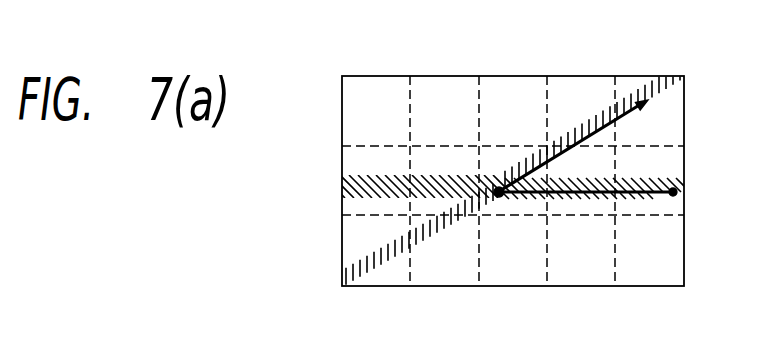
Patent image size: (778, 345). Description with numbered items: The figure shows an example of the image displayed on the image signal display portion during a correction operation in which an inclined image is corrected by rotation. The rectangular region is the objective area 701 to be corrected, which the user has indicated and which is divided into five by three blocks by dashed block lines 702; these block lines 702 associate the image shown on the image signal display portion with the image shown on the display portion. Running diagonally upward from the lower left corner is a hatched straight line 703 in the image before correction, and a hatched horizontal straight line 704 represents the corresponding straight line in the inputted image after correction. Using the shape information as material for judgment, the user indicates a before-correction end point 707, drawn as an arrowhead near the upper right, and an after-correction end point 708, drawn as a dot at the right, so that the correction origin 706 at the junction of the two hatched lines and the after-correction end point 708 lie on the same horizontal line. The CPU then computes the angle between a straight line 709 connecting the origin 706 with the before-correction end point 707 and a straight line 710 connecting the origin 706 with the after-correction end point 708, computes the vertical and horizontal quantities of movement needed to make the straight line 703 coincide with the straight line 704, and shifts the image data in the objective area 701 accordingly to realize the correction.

The objective area to be corrected 701 is at (530, 75).
The block lines 702 is at (615, 262).
The straight line in the image before correction 703 is at (375, 266).
The straight line in the image after correction 704 is at (368, 176).
The correction origin 706 is at (502, 197).
The before-correction end point 707 is at (647, 96).
The after-correction end point 708 is at (673, 196).
The straight line connecting the origin with the before-correction end point 709 is at (645, 110).
The straight line connecting the origin with the after-correction end point 710 is at (646, 198).